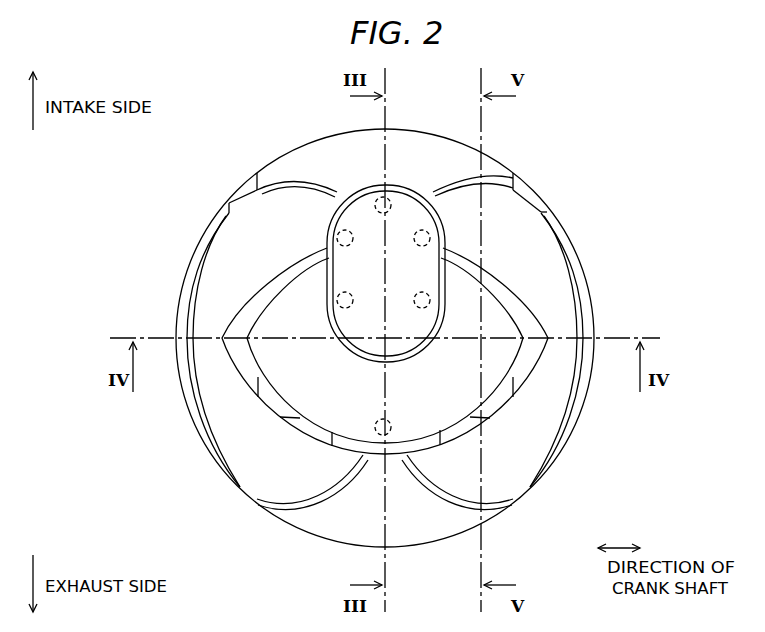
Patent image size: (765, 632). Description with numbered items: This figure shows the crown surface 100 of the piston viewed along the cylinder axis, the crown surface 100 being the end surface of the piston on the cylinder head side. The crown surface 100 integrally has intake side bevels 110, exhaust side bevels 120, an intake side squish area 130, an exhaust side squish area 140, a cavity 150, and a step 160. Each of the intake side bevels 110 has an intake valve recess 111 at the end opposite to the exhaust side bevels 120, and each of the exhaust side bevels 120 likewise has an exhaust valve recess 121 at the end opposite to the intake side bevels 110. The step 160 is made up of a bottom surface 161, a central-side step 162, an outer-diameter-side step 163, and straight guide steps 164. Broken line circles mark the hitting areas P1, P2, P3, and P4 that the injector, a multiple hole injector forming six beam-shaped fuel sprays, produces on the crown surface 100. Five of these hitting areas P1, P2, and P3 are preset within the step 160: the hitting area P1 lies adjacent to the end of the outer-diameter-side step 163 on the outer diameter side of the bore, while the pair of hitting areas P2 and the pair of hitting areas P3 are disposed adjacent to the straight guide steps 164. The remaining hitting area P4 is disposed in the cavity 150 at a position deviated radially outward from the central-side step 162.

The crown surface 100 is at (563, 183).
The intake side bevels 110 is at (244, 253).
The intake valve recess 111 is at (256, 187).
The exhaust side bevels 120 is at (258, 442).
The exhaust valve recess 121 is at (288, 498).
The intake side squish area 130 is at (305, 167).
The exhaust side squish area 140 is at (327, 523).
The cavity 150 is at (452, 377).
The step 160 is at (430, 270).
The bottom surface 161 is at (412, 278).
The central-side step 162 is at (413, 348).
The outer-diameter-side step 163 is at (357, 193).
The straight guide steps 164 is at (331, 247).
The hitting area P1 is at (387, 203).
The hitting areas P2 is at (413, 242).
The hitting areas P3 is at (417, 305).
The hitting area P4 is at (388, 435).